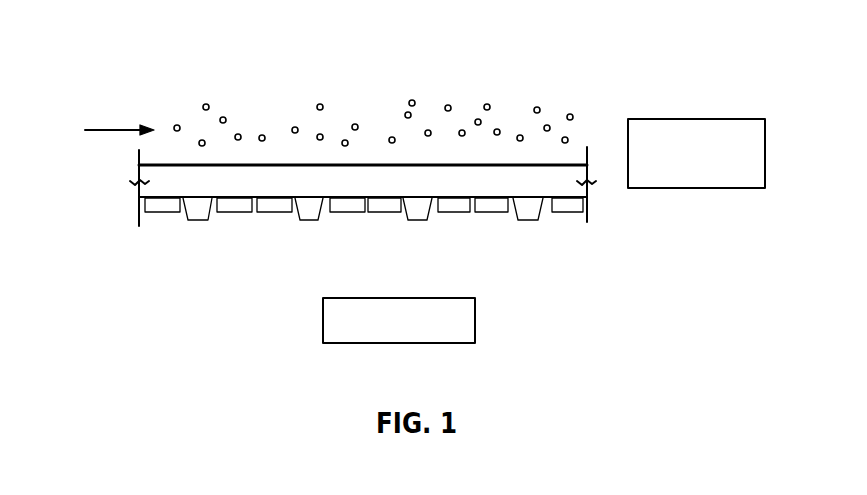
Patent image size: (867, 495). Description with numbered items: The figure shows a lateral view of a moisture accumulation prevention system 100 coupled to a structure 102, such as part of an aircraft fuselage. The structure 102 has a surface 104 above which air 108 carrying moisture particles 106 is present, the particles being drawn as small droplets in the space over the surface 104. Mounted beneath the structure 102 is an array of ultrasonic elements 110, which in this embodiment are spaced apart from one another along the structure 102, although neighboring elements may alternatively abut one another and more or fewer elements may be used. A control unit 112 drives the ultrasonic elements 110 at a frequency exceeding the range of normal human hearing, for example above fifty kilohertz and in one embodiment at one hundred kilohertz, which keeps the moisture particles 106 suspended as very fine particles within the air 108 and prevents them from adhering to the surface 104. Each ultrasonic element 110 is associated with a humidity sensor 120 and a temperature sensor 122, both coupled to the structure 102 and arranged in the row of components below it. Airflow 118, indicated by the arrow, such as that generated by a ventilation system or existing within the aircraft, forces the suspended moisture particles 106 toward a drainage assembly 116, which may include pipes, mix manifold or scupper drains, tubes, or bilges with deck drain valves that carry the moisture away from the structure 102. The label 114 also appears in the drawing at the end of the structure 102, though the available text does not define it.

The moisture accumulation prevention system 100 is at (113, 258).
The structure 102 is at (134, 176).
The surface 104 is at (170, 165).
The moisture particles 106 is at (207, 103).
The air 108 is at (340, 50).
The ultrasonic elements 110 is at (200, 221).
The control unit 112 is at (475, 335).
The plate end / edge 114 is at (138, 205).
The drainage assembly 116 is at (737, 119).
The airflow 118 is at (126, 128).
The humidity sensors 120 is at (170, 213).
The temperature sensors 122 is at (235, 203).